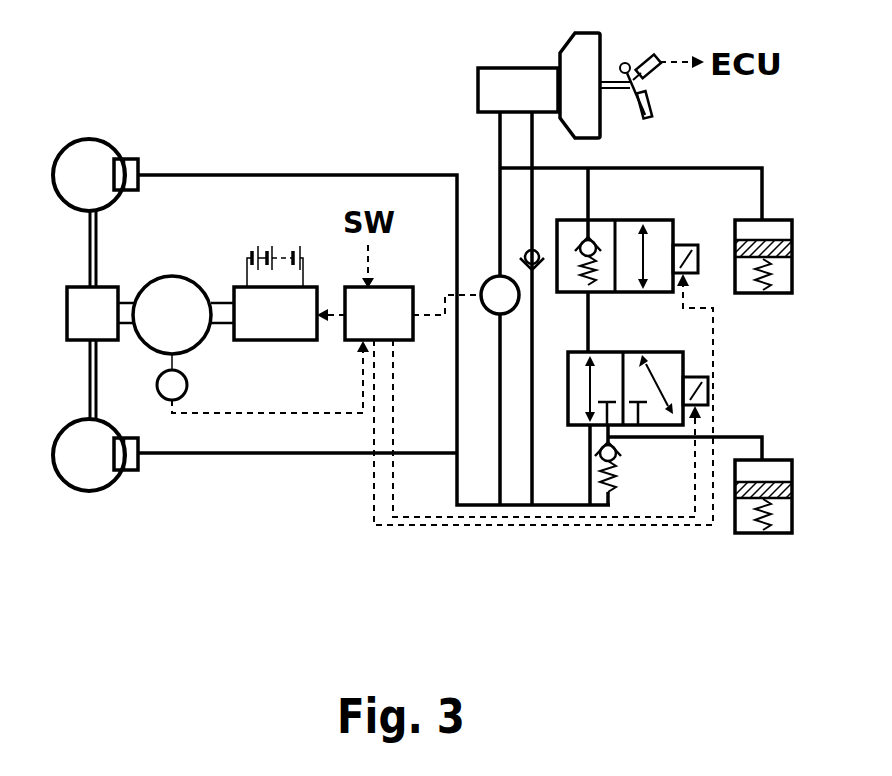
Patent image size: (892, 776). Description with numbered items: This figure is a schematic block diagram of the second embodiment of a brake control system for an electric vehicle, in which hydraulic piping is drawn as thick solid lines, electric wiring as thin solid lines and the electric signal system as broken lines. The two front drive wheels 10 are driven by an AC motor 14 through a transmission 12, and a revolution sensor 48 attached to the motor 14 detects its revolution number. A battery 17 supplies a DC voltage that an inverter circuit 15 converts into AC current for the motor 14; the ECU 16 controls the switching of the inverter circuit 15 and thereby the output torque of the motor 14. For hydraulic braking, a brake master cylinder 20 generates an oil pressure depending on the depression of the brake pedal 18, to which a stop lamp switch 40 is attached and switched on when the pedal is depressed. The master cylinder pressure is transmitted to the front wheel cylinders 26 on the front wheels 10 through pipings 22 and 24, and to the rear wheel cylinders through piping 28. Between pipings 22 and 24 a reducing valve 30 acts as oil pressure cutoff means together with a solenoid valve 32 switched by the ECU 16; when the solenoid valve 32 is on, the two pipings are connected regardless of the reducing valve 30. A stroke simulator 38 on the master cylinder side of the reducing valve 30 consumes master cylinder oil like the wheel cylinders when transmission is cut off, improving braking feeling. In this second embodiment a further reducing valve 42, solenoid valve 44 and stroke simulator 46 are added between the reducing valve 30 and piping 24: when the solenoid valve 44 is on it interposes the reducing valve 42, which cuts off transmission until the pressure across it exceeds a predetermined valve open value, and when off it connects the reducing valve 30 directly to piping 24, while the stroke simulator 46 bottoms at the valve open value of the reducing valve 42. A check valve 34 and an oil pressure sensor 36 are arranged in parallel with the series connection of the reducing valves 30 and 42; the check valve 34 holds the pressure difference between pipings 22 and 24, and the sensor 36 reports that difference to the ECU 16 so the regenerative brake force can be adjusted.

The front drive wheels 10 is at (91, 139).
The transmission 12 is at (108, 286).
The AC motor 14 is at (173, 276).
The inverter circuit 15 is at (285, 341).
The ECU 16 is at (401, 286).
The battery 17 is at (278, 249).
The brake pedal 18 is at (650, 107).
The brake master cylinder 20 is at (497, 67).
The piping 22 is at (498, 131).
The piping 24 is at (513, 508).
The front wheel cylinders 26 is at (134, 158).
The piping 28 is at (537, 113).
The reducing valve 30 is at (600, 270).
The solenoid valve 32 is at (674, 226).
The check valve 34 is at (537, 247).
The oil pressure sensor 36 is at (495, 275).
The stroke simulator 38 is at (777, 219).
The stop lamp switch 40 is at (648, 59).
The reducing valve 42 is at (618, 455).
The solenoid valve 44 is at (666, 351).
The stroke simulator 46 is at (775, 458).
The revolution sensor 48 is at (188, 383).